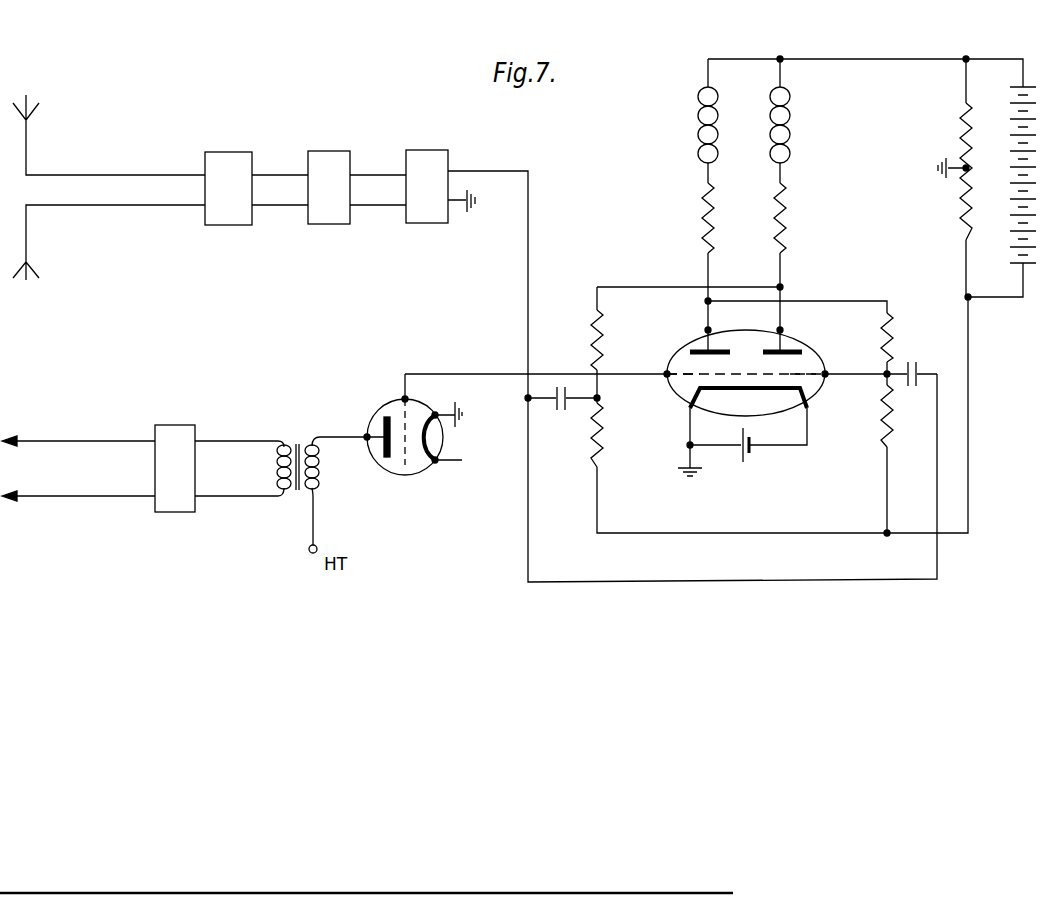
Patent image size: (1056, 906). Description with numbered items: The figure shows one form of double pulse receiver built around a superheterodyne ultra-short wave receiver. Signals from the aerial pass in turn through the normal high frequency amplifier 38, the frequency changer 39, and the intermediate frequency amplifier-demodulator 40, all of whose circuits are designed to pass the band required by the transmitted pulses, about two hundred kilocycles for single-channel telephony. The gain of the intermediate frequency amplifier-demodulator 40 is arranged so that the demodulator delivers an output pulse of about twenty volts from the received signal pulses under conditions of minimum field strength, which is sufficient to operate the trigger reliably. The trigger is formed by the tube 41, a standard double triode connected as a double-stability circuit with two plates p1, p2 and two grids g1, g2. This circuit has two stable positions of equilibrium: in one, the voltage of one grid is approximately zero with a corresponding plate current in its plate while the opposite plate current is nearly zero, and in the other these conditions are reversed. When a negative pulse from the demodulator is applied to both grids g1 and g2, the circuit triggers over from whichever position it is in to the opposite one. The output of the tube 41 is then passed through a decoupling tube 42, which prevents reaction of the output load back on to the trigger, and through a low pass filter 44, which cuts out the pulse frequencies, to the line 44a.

The high frequency amplifier 38 is at (233, 142).
The frequency changer 39 is at (336, 214).
The intermediate frequency amplifier-demodulator 40 is at (442, 158).
The tube 41 is at (818, 343).
The decoupling tube 42 is at (395, 475).
The low pass filter 44 is at (82, 445).
The line 44a is at (92, 486).
The plate p1 is at (695, 342).
The plate p2 is at (788, 352).
The grid g1 is at (696, 378).
The grid g2 is at (803, 376).